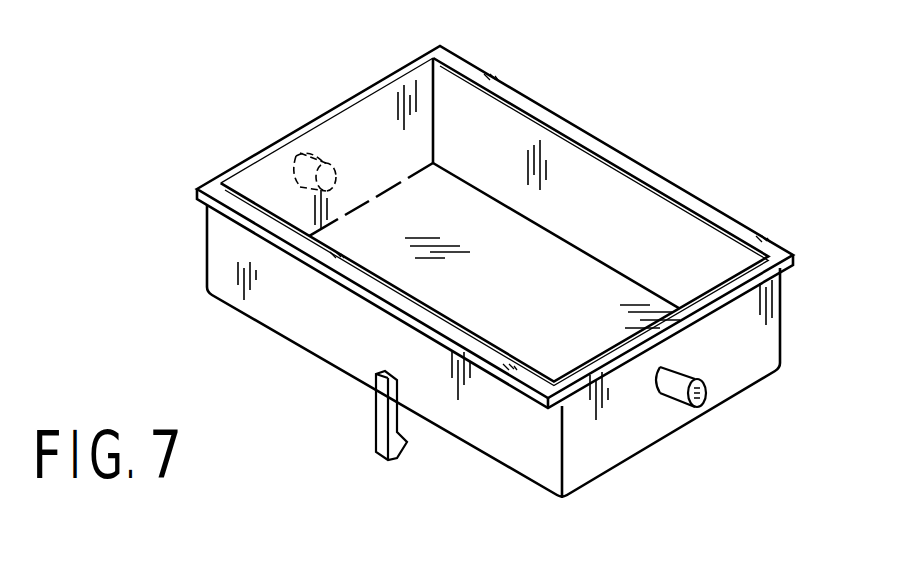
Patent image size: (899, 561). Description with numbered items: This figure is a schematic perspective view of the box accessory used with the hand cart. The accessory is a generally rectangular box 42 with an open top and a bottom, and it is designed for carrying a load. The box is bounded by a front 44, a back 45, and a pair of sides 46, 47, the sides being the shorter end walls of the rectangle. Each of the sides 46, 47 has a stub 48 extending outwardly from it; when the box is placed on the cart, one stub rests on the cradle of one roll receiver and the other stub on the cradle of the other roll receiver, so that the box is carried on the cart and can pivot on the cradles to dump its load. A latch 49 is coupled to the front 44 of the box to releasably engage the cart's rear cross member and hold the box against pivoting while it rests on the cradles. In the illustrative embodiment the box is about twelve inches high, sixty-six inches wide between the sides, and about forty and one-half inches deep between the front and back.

The box 42 is at (650, 122).
The front 44 is at (287, 327).
The back 45 is at (457, 93).
The side 46 is at (765, 338).
The side 47 is at (260, 150).
The stub 48 is at (673, 405).
The latch 49 is at (377, 452).